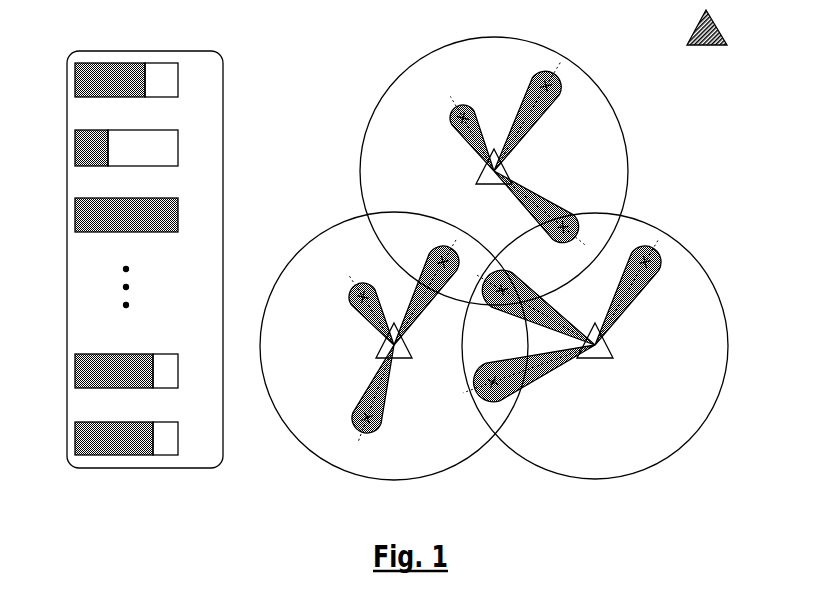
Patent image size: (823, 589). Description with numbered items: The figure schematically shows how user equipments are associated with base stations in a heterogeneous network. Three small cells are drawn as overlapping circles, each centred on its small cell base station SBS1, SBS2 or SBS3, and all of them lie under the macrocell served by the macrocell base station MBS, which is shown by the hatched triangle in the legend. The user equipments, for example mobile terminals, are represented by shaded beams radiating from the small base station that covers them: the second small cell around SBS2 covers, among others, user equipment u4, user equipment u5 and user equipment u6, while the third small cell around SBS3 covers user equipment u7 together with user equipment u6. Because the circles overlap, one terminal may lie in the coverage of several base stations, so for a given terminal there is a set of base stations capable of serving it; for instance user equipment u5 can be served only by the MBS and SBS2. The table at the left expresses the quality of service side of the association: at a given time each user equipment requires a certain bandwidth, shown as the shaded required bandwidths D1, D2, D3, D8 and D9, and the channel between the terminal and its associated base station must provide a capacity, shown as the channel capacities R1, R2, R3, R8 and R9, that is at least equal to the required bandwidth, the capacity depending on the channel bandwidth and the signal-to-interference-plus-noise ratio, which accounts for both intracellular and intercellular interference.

The user equipment u4 is at (539, 116).
The user equipment u5 is at (473, 133).
The user equipment u6 is at (546, 208).
The user equipment u7 is at (637, 291).
The required bandwidth D1 is at (126, 80).
The required bandwidth D2 is at (126, 148).
The required bandwidth D3 is at (126, 215).
The required bandwidth D8 is at (126, 371).
The required bandwidth D9 is at (126, 438).
The channel capacity R1 is at (197, 82).
The channel capacity R2 is at (197, 150).
The channel capacity R3 is at (197, 217).
The channel capacity R8 is at (197, 373).
The channel capacity R9 is at (197, 440).
The small cell base station SBS1 is at (394, 346).
The small cell base station SBS2 is at (494, 171).
The small cell base station SBS3 is at (595, 346).
The macrocell base station MBS is at (730, 28).